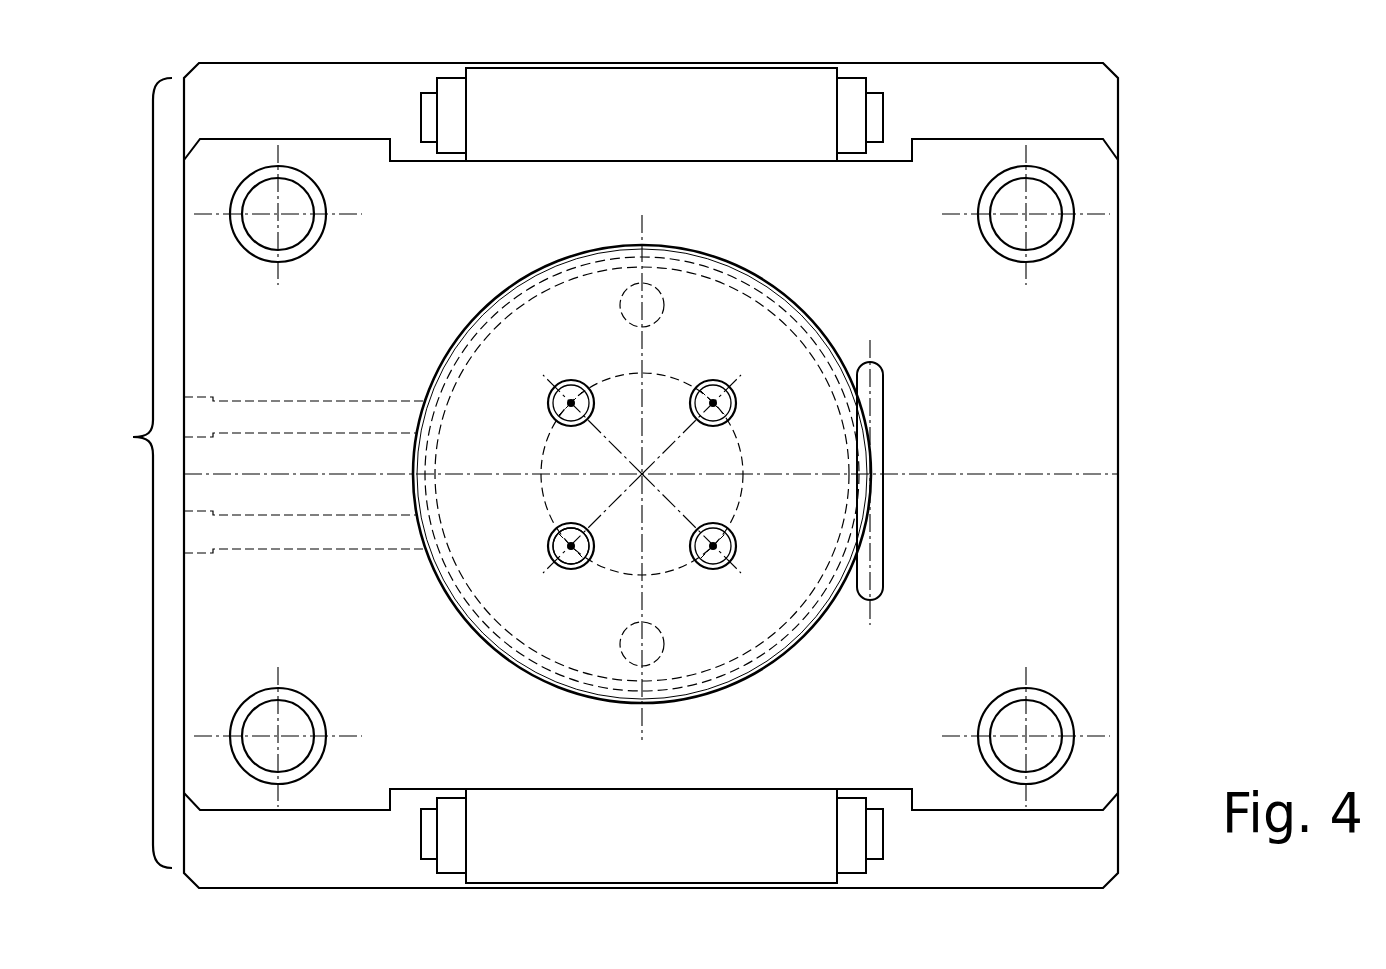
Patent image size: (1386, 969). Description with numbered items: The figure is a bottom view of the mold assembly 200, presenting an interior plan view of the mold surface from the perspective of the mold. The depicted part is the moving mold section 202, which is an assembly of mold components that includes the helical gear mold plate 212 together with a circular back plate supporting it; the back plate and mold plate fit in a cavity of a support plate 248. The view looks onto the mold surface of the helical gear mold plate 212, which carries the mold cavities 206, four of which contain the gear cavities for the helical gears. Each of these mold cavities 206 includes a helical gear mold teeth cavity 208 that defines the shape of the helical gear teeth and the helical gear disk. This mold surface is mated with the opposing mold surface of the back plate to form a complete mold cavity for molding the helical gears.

The mold assembly 200 is at (1118, 356).
The moving mold section 202 is at (123, 473).
The mold cavities 206 is at (558, 406).
The helical gear mold teeth cavity 208 is at (540, 543).
The helical gear mold plate 212 is at (786, 304).
The support plate 248 is at (358, 351).